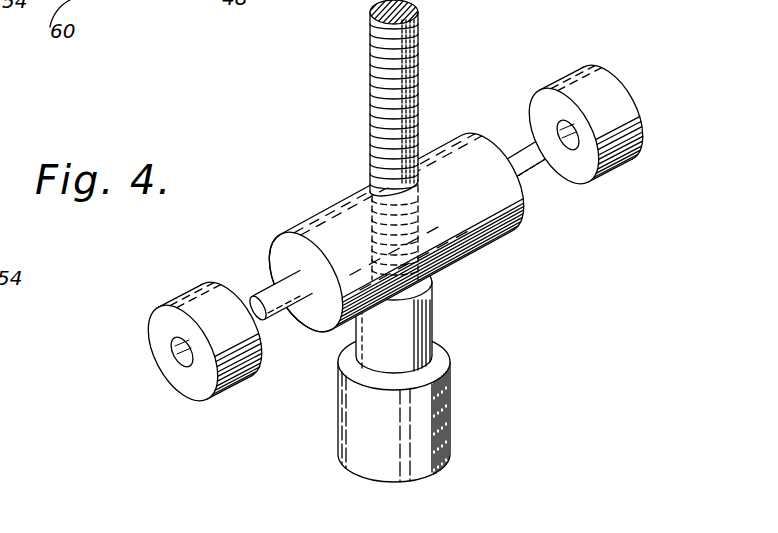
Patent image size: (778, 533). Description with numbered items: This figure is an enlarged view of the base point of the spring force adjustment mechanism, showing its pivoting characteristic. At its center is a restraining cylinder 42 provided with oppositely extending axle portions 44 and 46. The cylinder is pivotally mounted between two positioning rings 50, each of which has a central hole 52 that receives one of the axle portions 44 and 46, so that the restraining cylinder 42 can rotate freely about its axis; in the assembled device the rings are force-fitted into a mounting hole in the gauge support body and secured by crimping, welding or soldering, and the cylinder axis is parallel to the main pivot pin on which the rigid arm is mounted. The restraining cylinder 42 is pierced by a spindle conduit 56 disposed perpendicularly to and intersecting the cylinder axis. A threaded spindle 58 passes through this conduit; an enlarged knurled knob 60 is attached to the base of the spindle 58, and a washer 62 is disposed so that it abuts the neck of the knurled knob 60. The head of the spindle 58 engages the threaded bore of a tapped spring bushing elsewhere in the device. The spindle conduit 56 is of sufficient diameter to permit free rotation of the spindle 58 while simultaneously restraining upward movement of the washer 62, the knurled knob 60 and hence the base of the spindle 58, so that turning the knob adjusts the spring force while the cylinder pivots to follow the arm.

The restraining cylinder 42 is at (488, 235).
The axle portion 44 is at (262, 293).
The axle portion 46 is at (546, 164).
The positioning ring 50 is at (391, 247).
The central hole 52 is at (598, 172).
The spindle conduit 56 is at (371, 187).
The threaded spindle 58 is at (421, 62).
The knurled knob 60 is at (433, 425).
The washer 62 is at (407, 305).